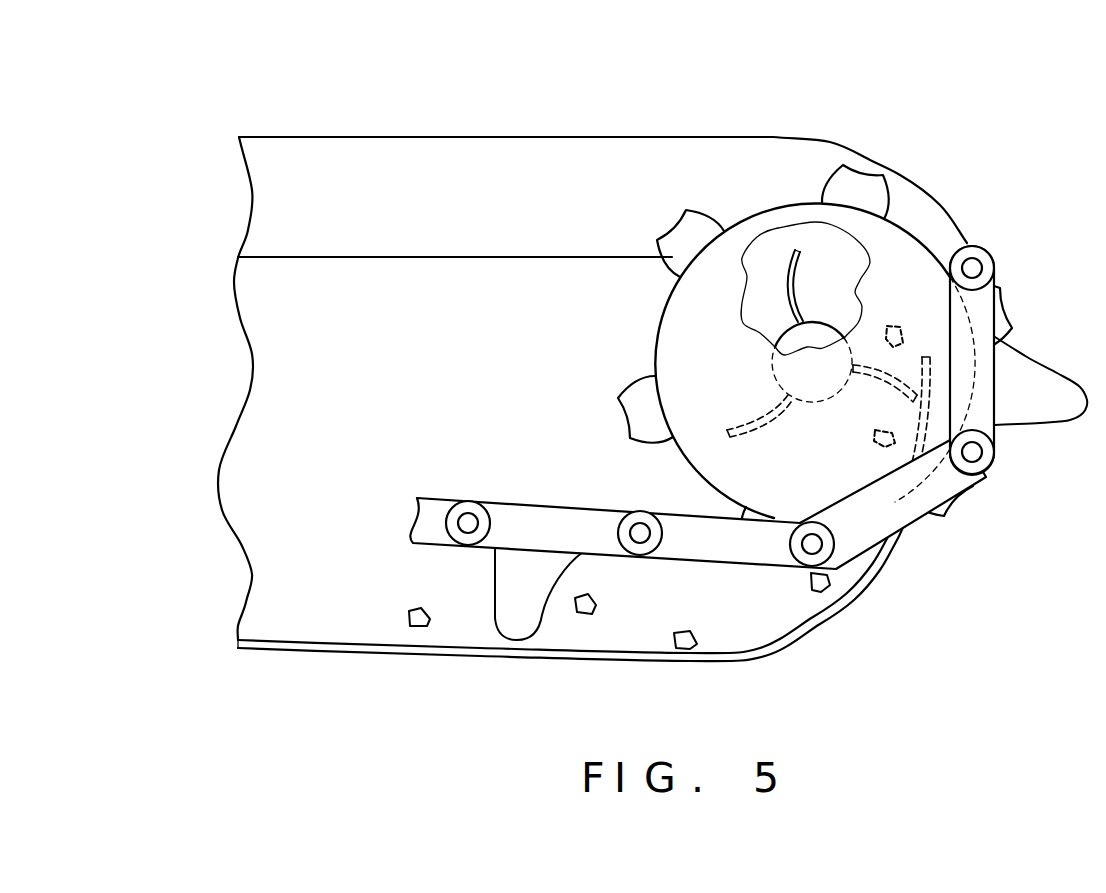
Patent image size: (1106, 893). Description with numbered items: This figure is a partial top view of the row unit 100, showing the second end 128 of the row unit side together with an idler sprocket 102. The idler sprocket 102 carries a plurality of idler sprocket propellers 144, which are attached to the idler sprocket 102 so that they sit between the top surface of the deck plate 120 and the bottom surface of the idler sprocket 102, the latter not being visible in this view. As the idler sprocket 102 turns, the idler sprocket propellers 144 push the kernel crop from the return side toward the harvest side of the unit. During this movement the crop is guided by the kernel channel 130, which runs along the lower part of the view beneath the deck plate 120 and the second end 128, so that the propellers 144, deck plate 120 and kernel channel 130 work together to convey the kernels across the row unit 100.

The row unit 100 is at (968, 112).
The idler sprocket 102 is at (885, 447).
The deck plate 120 is at (427, 153).
The second end 128 is at (963, 237).
The kernel channel 130 is at (585, 660).
The idler sprocket propellers 144 is at (783, 268).